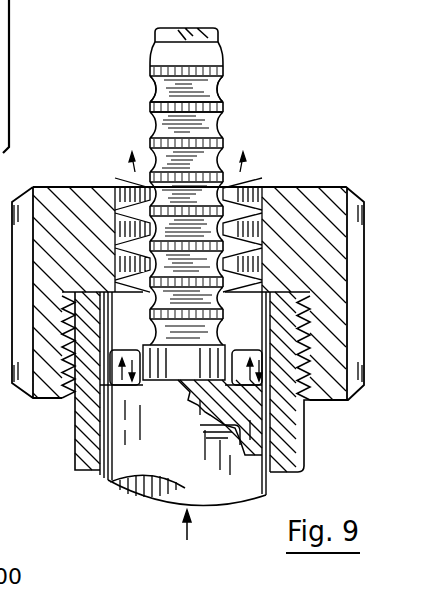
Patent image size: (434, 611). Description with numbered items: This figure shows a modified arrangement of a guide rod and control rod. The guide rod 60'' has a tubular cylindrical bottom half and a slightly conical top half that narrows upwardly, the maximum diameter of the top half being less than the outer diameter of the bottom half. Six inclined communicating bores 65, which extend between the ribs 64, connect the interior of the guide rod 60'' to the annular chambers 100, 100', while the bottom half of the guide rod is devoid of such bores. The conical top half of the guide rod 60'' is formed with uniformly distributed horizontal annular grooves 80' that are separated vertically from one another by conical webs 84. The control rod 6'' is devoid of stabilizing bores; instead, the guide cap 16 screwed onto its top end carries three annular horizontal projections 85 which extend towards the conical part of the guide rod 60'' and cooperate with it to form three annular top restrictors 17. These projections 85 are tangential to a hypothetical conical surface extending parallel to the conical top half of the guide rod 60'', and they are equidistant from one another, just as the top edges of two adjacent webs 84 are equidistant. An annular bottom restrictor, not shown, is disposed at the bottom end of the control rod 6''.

The guide cap 16 is at (47, 220).
The annular horizontal projections 85 is at (128, 222).
The annular top restrictors 17 is at (240, 222).
The guide rod 60'' is at (222, 204).
The annular grooves 80' is at (223, 89).
The conical webs 84 is at (225, 109).
The control rod 6'' is at (150, 399).
The ribs 64 is at (67, 425).
The inclined communicating bores 65 is at (245, 400).
The annular chamber 100 is at (73, 438).
The annular chamber 100' is at (252, 351).